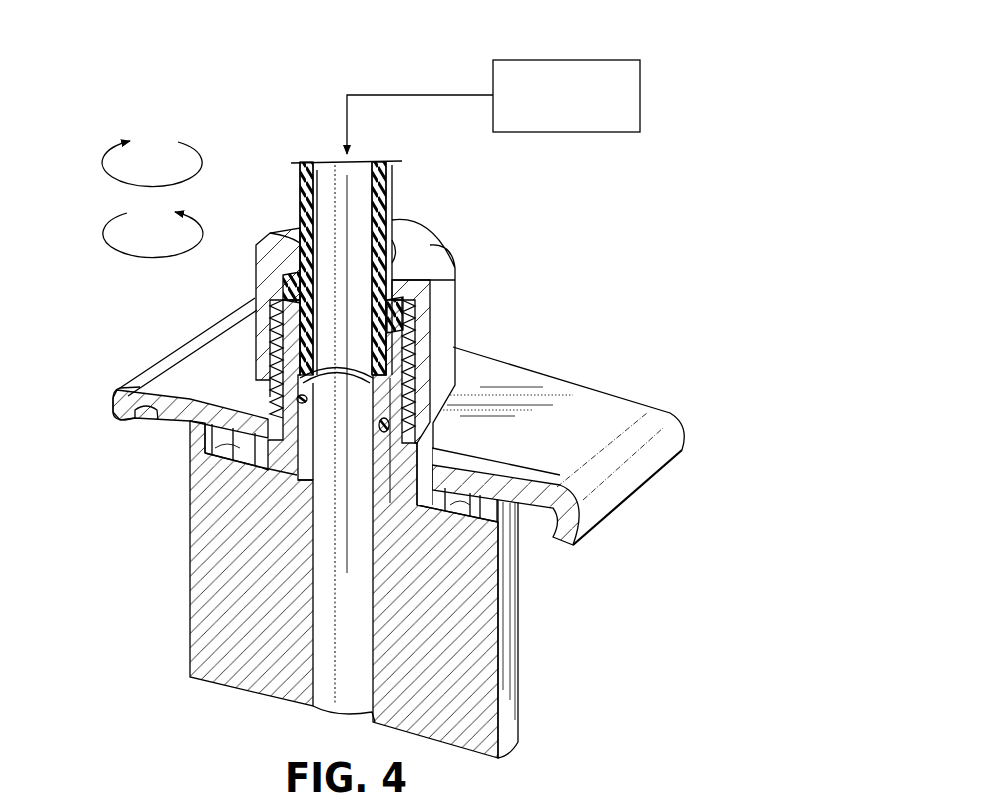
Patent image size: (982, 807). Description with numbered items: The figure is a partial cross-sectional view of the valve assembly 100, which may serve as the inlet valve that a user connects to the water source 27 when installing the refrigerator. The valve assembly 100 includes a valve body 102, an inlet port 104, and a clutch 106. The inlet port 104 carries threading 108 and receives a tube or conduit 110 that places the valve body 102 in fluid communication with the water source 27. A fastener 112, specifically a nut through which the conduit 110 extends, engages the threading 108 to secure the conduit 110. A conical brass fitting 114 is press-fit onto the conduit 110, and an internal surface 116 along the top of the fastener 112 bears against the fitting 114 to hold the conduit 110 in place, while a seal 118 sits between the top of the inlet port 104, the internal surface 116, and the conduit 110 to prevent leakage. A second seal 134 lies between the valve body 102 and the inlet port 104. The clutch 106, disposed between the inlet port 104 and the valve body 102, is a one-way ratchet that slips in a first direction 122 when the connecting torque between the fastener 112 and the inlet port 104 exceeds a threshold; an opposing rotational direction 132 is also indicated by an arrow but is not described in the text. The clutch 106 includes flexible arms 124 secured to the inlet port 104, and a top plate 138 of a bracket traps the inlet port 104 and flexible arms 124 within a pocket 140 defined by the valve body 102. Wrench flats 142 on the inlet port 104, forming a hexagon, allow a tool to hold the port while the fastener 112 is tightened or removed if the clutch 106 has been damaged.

The valve assembly 100 is at (716, 55).
The water source 27 is at (600, 60).
The valve body 102 is at (523, 687).
The inlet port 104 is at (275, 342).
The clutch 106 is at (240, 464).
The threading 108 is at (414, 377).
The conduit 110 is at (395, 190).
The fastener 112 is at (438, 248).
The fitting 114 is at (428, 287).
The internal surface 116 is at (282, 291).
The seal 118 is at (400, 324).
The first direction 122 is at (103, 160).
The flexible arms 124 is at (220, 452).
The counter-rotation direction arrow 132 is at (103, 231).
The second seal 134 is at (380, 421).
The top plate 138 is at (614, 396).
The pocket 140 is at (445, 500).
The wrench flats 142 is at (552, 476).